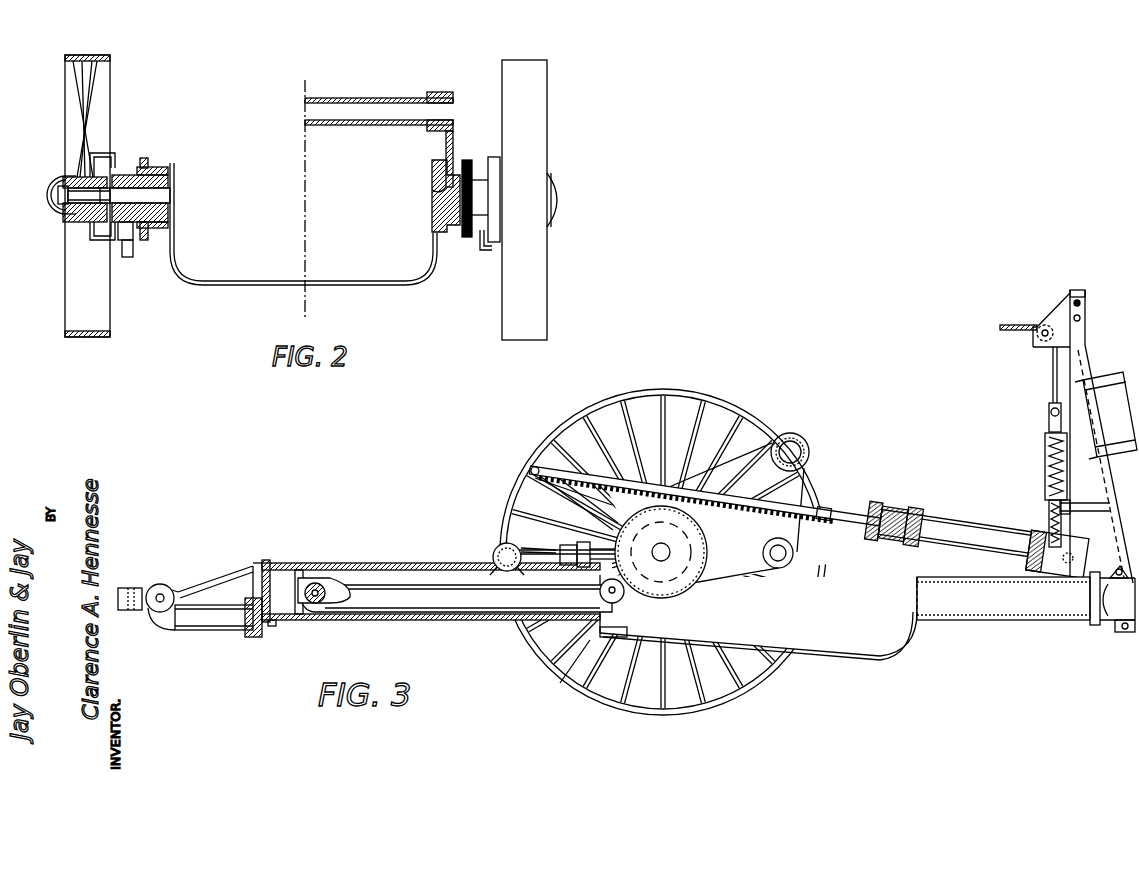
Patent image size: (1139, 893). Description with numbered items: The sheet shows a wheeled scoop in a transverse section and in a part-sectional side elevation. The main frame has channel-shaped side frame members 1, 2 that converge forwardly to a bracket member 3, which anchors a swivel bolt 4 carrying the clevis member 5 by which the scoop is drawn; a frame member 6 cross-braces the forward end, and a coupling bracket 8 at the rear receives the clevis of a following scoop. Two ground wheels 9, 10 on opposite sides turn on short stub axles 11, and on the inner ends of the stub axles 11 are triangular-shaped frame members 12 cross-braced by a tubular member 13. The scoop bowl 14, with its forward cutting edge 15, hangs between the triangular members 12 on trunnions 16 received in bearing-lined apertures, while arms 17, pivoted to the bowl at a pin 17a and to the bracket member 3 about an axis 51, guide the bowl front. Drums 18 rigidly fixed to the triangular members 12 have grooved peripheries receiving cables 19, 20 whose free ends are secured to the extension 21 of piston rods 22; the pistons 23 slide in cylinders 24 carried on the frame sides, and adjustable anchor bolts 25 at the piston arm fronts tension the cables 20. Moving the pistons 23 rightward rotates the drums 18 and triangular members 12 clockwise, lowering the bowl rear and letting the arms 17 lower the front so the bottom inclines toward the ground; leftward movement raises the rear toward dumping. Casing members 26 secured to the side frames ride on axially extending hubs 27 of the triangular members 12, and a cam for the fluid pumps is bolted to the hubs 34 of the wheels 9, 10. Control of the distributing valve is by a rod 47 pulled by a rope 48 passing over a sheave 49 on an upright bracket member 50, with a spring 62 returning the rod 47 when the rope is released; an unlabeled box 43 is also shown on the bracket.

In FIG. 2, the side frame member 1 is at (478, 250).
In FIG. 2, the side frame member 2 is at (127, 257).
In FIG. 3, the side frame member 2 is at (375, 563).
In FIG. 3, the bracket member 3 is at (244, 580).
In FIG. 3, the swivel bolt 4 is at (215, 618).
In FIG. 3, the clevis member 5 is at (140, 590).
In FIG. 3, the frame member 6 is at (492, 554).
In FIG. 3, the coupling bracket 8 is at (1128, 632).
In FIG. 2, the ground wheel 9 is at (68, 297).
In FIG. 2, the ground wheel 10 is at (535, 318).
In FIG. 3, the ground wheel 10 is at (688, 394).
In FIG. 2, the stub axle 11 is at (132, 186).
In FIG. 3, the stub axle 11 is at (668, 556).
In FIG. 2, the triangular-shaped frame member 12 is at (453, 150).
In FIG. 3, the triangular-shaped frame member 12 is at (792, 483).
In FIG. 2, the tubular member 13 is at (358, 98).
In FIG. 2, the scoop bowl 14 is at (180, 268).
In FIG. 3, the scoop bowl 14 is at (890, 637).
In FIG. 3, the cutting edge 15 is at (565, 672).
In FIG. 2, the trunnion 16 is at (432, 215).
In FIG. 3, the trunnion 16 is at (784, 556).
In FIG. 3, the arm 17 is at (463, 598).
In FIG. 3, the pin 17a is at (616, 594).
In FIG. 2, the drum 18 is at (146, 158).
In FIG. 3, the drum 18 is at (612, 527).
In FIG. 3, the cable 19 is at (745, 512).
In FIG. 3, the cable 20 is at (573, 491).
In FIG. 3, the extension 21 is at (698, 478).
In FIG. 3, the piston rod 22 is at (957, 516).
In FIG. 3, the piston 23 is at (1041, 539).
In FIG. 3, the cylinder 24 is at (982, 562).
In FIG. 3, the adjustable anchor bolt 25 is at (678, 511).
In FIG. 2, the casing member 26 is at (110, 153).
In FIG. 2, the hub 27 is at (99, 150).
In FIG. 2, the wheel hub 34 is at (78, 222).
In FIG. 3, the box 43 is at (1106, 415).
In FIG. 3, the rod 47 is at (1048, 421).
In FIG. 3, the rope 48 is at (1052, 369).
In FIG. 3, the sheave 49 is at (1042, 328).
In FIG. 3, the upright bracket member 50 is at (1086, 350).
In FIG. 3, the axis 51 is at (315, 603).
In FIG. 3, the spring 62 is at (1049, 462).